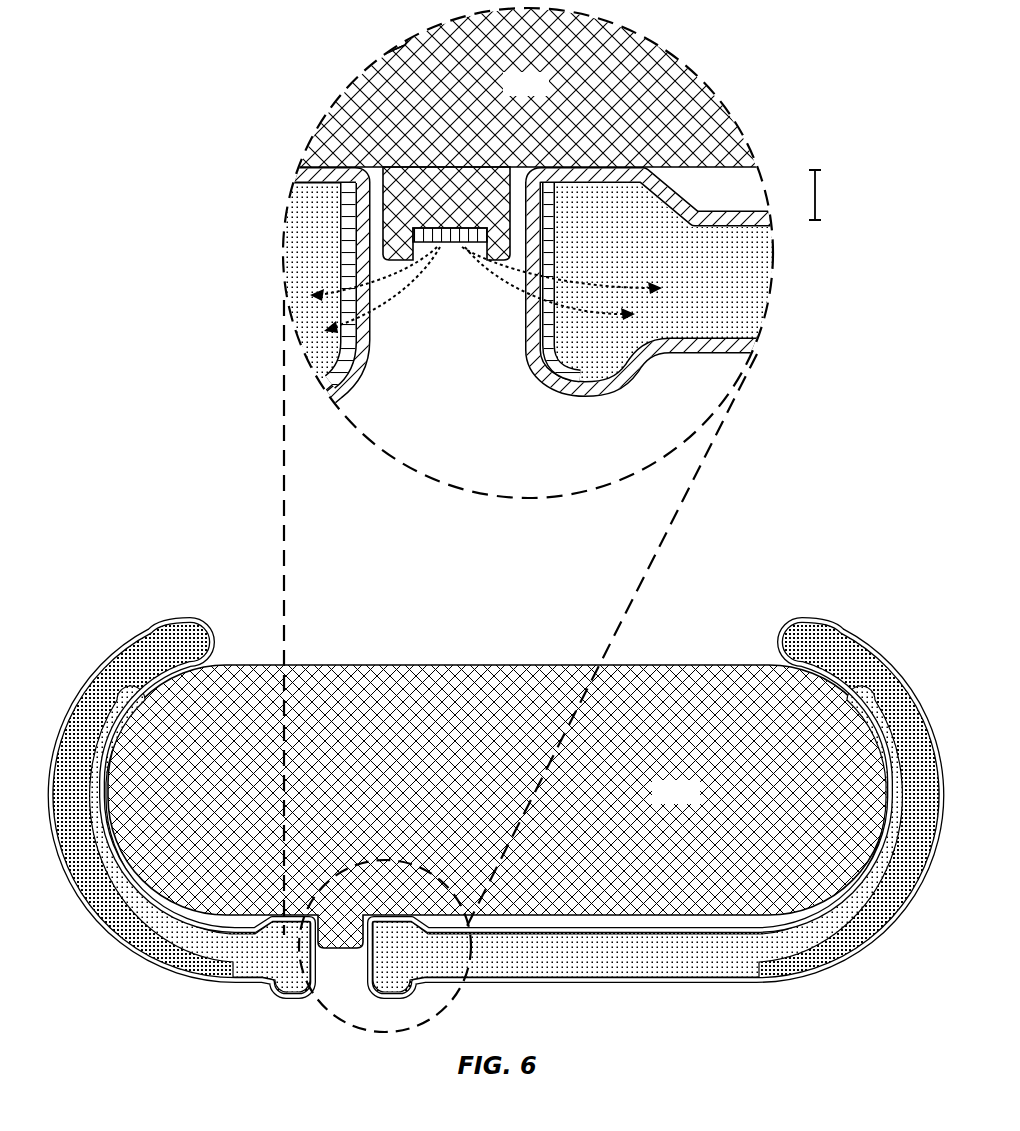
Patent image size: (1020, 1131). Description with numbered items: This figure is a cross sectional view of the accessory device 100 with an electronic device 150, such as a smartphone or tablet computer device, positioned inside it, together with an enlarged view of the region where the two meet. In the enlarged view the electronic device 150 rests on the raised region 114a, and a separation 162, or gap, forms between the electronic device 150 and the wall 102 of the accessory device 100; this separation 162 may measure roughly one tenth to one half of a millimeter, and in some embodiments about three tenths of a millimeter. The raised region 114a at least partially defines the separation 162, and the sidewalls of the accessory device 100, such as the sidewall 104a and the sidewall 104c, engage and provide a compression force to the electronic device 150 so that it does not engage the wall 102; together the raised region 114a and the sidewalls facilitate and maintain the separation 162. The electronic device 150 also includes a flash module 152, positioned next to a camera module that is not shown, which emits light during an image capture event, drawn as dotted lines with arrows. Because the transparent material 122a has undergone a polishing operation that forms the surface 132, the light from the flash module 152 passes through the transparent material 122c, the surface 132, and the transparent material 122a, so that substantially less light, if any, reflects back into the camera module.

The accessory device 100 is at (126, 566).
The wall 102 is at (484, 618).
The sidewall 104a is at (60, 664).
The sidewall 104c is at (912, 654).
The raised region 114a is at (330, 128).
The transparent material 122a is at (343, 391).
The transparent material 122c is at (366, 370).
The surface 132 is at (358, 340).
The electronic device 150 is at (660, 804).
The flash module 152 is at (452, 246).
The separation 162 is at (823, 185).